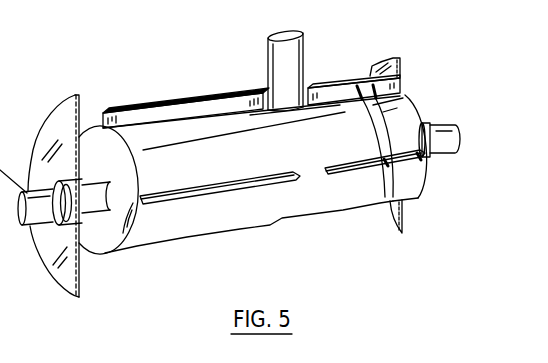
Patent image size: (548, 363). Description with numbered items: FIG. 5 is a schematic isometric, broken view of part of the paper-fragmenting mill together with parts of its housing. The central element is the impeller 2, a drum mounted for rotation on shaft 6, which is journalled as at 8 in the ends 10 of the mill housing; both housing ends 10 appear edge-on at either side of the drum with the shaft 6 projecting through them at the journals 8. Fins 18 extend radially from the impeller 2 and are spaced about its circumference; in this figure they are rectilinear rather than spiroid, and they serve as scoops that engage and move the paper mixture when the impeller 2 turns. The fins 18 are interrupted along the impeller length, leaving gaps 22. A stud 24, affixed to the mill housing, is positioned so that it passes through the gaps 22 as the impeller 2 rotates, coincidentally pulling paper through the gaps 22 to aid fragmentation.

The impeller 2 is at (157, 96).
The shaft 6 is at (458, 127).
The journal 8 is at (82, 187).
The housing end 10 is at (62, 110).
The fin 18 is at (125, 112).
The gap 22 is at (266, 106).
The stud 24 is at (304, 73).